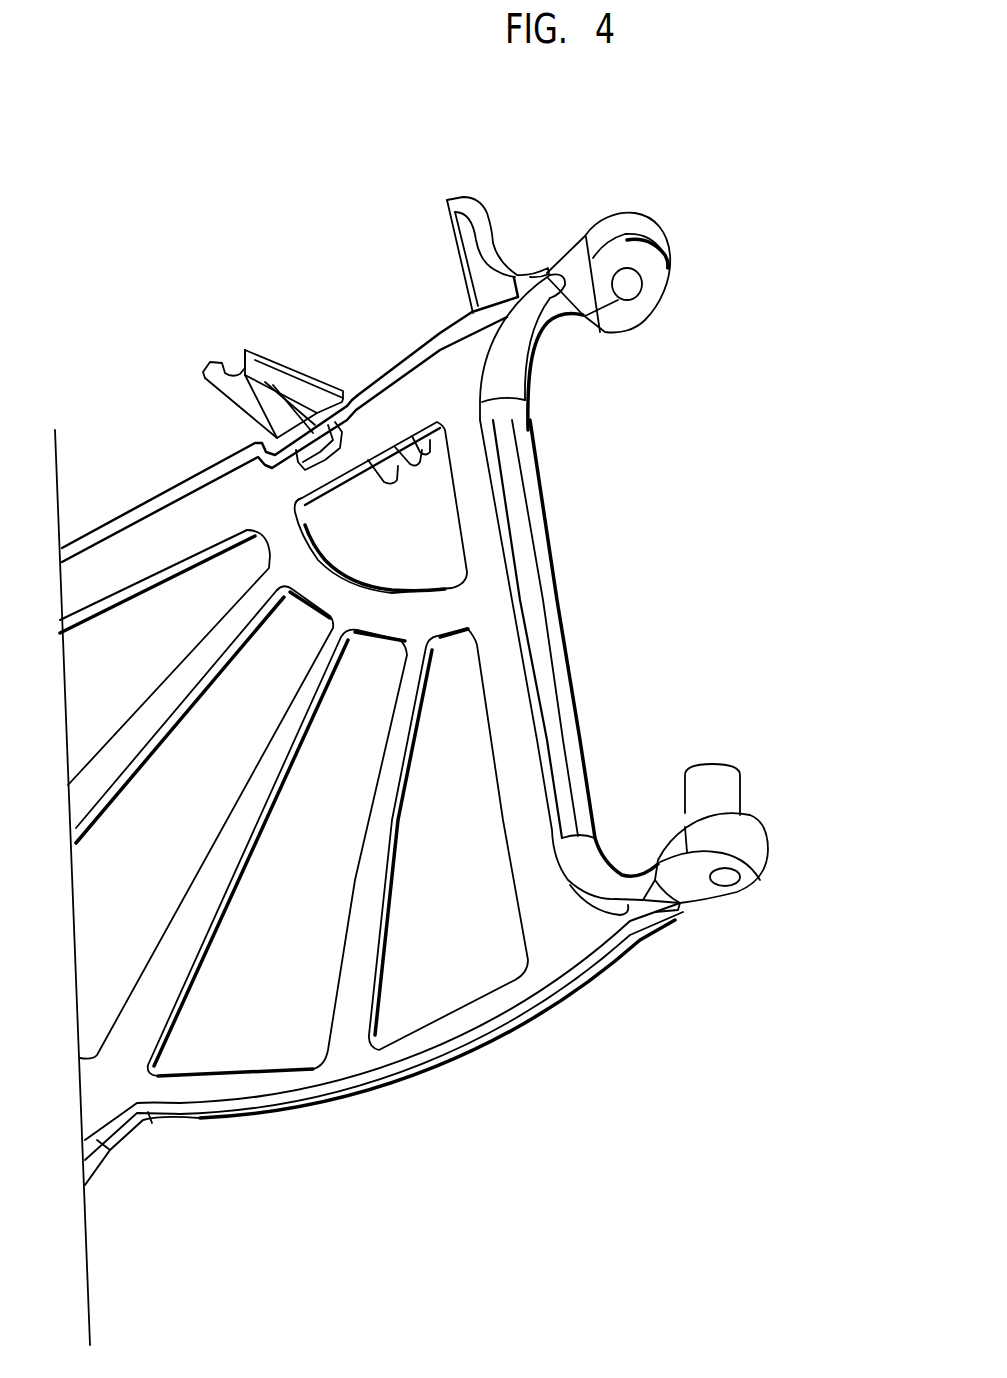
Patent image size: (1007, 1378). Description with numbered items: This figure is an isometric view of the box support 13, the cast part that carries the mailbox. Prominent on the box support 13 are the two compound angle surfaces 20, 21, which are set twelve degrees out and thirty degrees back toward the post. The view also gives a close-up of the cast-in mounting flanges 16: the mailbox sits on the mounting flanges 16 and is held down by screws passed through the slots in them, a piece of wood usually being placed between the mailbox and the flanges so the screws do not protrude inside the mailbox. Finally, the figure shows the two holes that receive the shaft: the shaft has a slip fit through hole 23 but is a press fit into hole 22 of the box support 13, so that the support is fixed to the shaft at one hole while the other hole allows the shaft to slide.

The box support 13 is at (557, 615).
The mounting flanges 16 is at (249, 347).
The compound angle surface 20 is at (631, 257).
The compound angle surface 21 is at (653, 272).
The hole 22 is at (627, 284).
The hole 23 is at (724, 877).